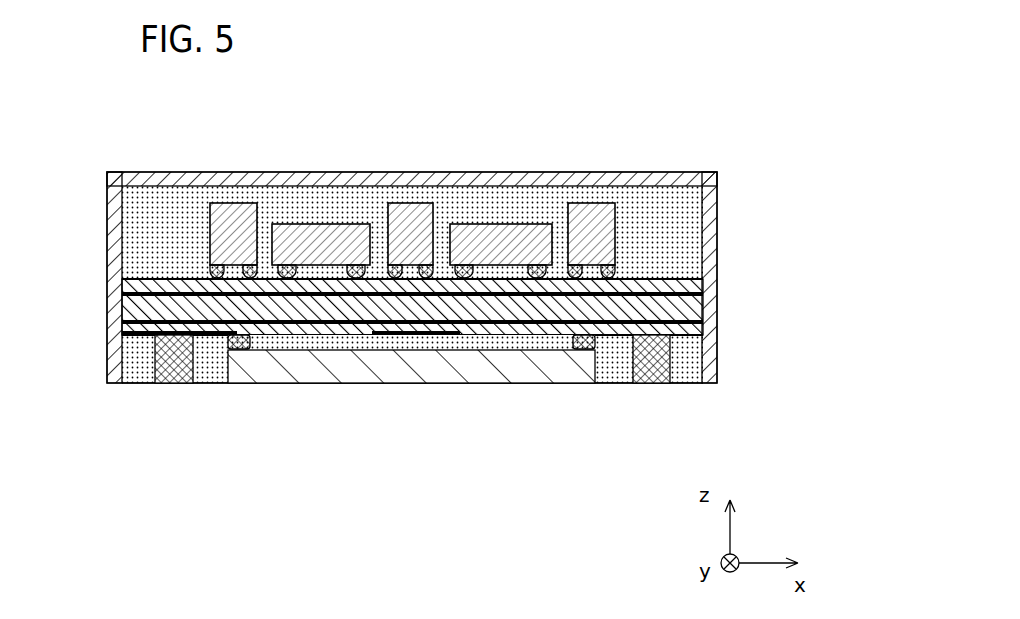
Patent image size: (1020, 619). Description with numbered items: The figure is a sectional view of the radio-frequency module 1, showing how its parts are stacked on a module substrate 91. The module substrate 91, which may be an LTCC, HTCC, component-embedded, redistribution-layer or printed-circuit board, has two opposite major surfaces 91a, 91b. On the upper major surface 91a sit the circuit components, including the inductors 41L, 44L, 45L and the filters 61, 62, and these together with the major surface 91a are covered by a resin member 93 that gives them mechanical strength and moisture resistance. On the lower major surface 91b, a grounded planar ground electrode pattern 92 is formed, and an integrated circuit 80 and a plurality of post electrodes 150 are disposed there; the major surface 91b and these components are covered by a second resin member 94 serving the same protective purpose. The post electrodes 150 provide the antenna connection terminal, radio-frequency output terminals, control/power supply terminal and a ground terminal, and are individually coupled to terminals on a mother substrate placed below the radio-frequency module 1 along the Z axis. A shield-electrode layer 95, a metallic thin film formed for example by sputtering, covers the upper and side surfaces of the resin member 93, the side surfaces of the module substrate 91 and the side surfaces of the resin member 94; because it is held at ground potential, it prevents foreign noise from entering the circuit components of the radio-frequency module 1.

The radio-frequency module 1 is at (757, 66).
The inductor 41L is at (420, 203).
The inductor 44L is at (592, 203).
The inductor 45L is at (236, 203).
The filter 61 is at (508, 224).
The filter 62 is at (330, 224).
The integrated circuit 80 is at (276, 383).
The module substrate 91 is at (134, 312).
The major surface 91a is at (130, 275).
The major surface 91b is at (128, 337).
The ground electrode pattern 92 is at (563, 338).
The resin member 93 is at (692, 250).
The resin member 94 is at (692, 366).
The shield-electrode layer 95 is at (681, 172).
The post electrodes 150 is at (173, 383).